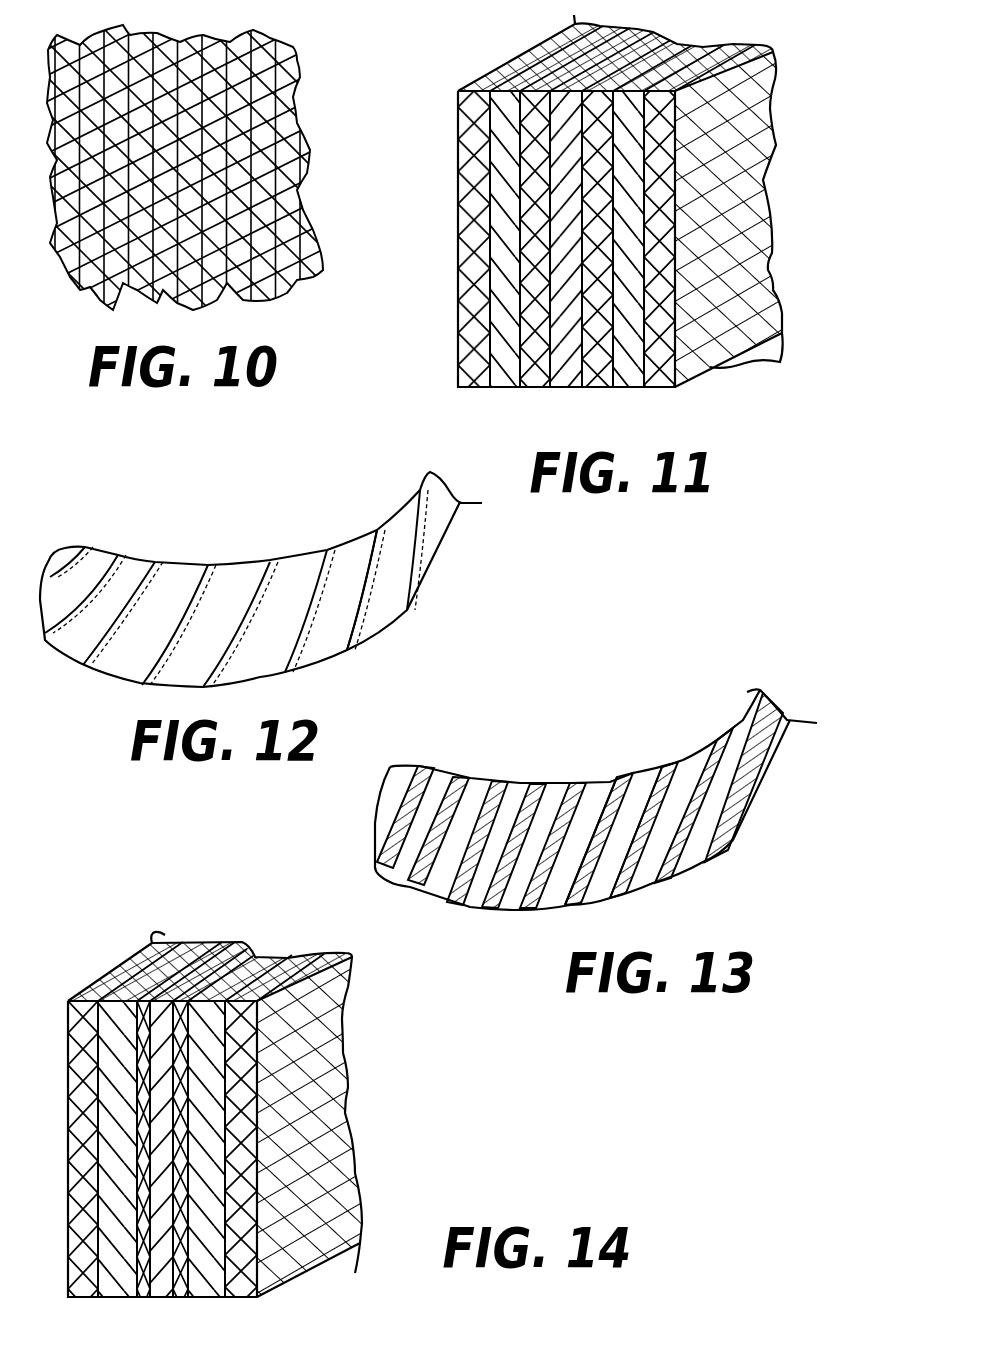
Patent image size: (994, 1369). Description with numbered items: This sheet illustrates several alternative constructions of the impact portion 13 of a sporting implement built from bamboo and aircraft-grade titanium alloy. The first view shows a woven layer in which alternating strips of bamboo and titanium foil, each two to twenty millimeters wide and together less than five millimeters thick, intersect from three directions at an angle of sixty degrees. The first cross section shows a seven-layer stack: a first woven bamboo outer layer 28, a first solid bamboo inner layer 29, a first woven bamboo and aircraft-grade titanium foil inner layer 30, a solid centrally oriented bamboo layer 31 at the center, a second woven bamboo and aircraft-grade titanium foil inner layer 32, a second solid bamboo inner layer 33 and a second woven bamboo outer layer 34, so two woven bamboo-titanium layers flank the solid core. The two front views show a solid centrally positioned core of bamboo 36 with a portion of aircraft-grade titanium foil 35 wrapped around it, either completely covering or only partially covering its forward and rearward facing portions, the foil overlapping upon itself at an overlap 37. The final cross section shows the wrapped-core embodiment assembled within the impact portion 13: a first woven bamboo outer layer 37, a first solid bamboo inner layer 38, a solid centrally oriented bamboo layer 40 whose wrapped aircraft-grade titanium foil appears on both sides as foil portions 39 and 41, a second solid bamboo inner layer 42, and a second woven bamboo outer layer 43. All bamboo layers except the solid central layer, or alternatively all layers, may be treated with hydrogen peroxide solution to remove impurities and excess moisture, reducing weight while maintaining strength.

In FIG. 11, the impact portion 13 is at (742, 28).
In FIG. 12, the impact portion 13 is at (280, 514).
In FIG. 13, the impact portion 13 is at (673, 714).
In FIG. 14, the impact portion 13 is at (233, 914).
In FIG. 11, the first woven bamboo outer layer 28 is at (480, 98).
In FIG. 11, the first solid bamboo inner layer 29 is at (508, 152).
In FIG. 11, the first woven bamboo and aircraft-grade titanium foil inner layer 30 is at (537, 192).
In FIG. 11, the solid centrally oriented bamboo layer 31 is at (568, 237).
In FIG. 11, the second woven bamboo and aircraft-grade titanium foil inner layer 32 is at (597, 287).
In FIG. 11, the second solid bamboo inner layer 33 is at (628, 343).
In FIG. 11, the second woven bamboo outer layer 34 is at (773, 363).
In FIG. 12, the aircraft-grade titanium foil 35 is at (182, 578).
In FIG. 13, the aircraft-grade titanium foil 35 is at (537, 800).
In FIG. 12, the solid centrally positioned core of bamboo 36 is at (247, 577).
In FIG. 13, the solid centrally positioned core of bamboo 36 is at (608, 795).
In FIG. 12, the first woven bamboo outer layer 37 is at (378, 528).
In FIG. 14, the first woven bamboo outer layer 37 is at (80, 1038).
In FIG. 14, the first solid bamboo inner layer 38 is at (122, 1062).
In FIG. 14, the aircraft-grade titanium foil 39 is at (138, 1082).
In FIG. 14, the solid centrally oriented bamboo layer 40 is at (157, 1105).
In FIG. 14, the aircraft-grade titanium foil 41 is at (180, 1128).
In FIG. 14, the second solid bamboo inner layer 42 is at (200, 1167).
In FIG. 14, the second woven bamboo outer layer 43 is at (235, 1202).